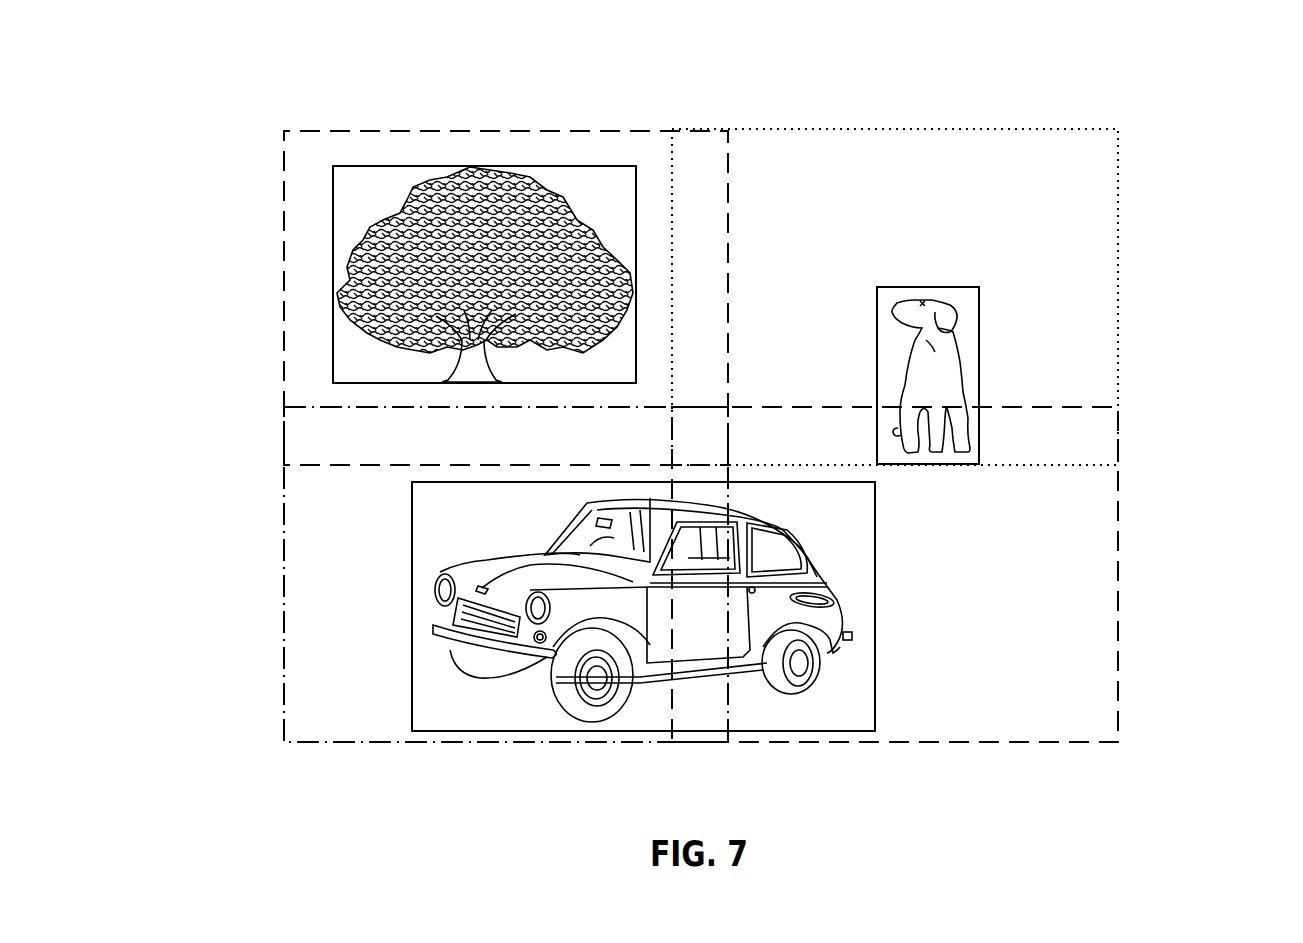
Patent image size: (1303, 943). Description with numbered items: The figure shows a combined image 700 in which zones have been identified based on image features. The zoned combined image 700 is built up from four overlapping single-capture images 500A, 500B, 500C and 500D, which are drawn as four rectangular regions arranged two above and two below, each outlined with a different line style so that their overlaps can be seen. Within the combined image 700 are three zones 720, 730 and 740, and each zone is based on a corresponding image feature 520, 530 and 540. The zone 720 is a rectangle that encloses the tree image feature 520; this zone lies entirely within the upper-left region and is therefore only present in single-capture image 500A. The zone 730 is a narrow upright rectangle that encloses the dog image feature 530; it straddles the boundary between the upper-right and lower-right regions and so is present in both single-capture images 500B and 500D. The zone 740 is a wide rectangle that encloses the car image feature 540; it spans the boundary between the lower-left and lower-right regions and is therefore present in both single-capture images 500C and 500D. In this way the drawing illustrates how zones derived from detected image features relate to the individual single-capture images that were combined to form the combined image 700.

The combined image 700 is at (174, 65).
The single-capture image 500A is at (284, 296).
The single-capture image 500B is at (1119, 297).
The single-capture image 500C is at (284, 574).
The single-capture image 500D is at (1119, 575).
The zone 720 is at (333, 180).
The tree image feature 520 is at (356, 244).
The zone 730 is at (979, 298).
The dog image feature 530 is at (977, 366).
The zone 740 is at (412, 510).
The car image feature 540 is at (850, 607).